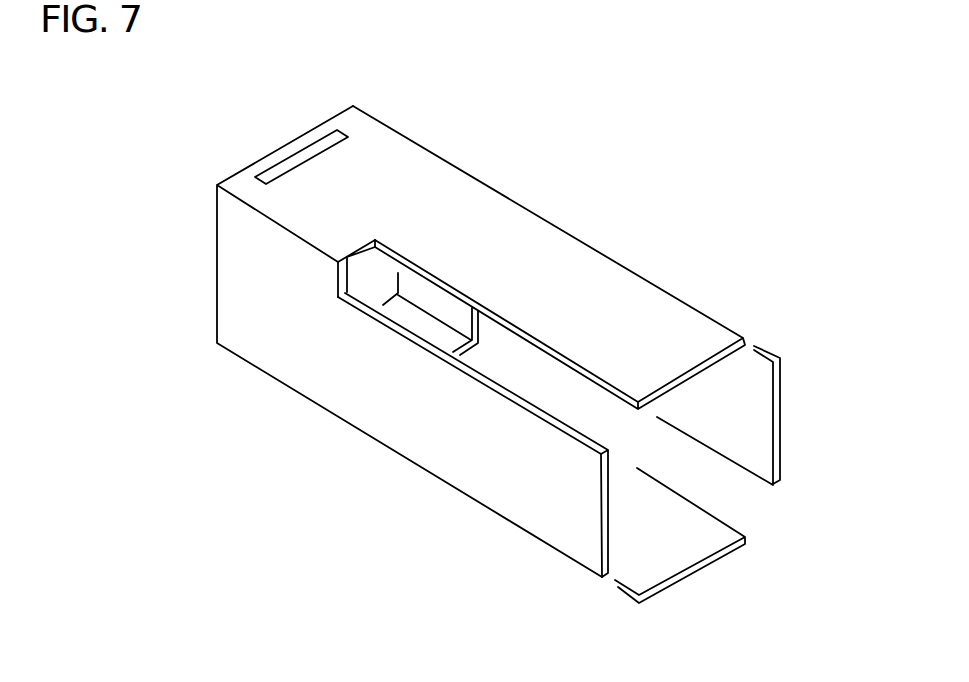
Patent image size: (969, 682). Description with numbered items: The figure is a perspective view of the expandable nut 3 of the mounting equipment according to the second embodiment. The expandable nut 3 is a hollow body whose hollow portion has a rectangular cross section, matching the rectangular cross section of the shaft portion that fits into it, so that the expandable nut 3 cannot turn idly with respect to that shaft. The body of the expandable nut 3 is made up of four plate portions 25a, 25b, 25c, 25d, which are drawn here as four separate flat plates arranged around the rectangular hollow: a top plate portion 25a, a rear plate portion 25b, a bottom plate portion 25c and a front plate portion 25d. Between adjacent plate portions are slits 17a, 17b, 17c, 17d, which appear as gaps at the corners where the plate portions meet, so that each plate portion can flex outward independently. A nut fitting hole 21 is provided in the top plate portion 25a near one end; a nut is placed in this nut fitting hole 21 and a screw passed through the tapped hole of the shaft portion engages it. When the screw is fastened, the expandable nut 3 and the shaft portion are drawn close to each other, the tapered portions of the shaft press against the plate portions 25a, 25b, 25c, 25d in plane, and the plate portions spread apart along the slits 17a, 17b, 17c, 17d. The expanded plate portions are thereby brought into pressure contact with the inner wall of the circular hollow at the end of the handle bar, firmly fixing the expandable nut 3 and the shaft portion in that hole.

The expandable nut 3 is at (168, 206).
The nut fitting hole 21 is at (282, 172).
The plate portion 25a is at (643, 307).
The plate portion 25b is at (787, 425).
The plate portion 25c is at (705, 570).
The plate portion 25d is at (532, 518).
The slit 17a is at (750, 337).
The slit 17b is at (753, 507).
The slit 17c is at (607, 593).
The slit 17d is at (541, 378).